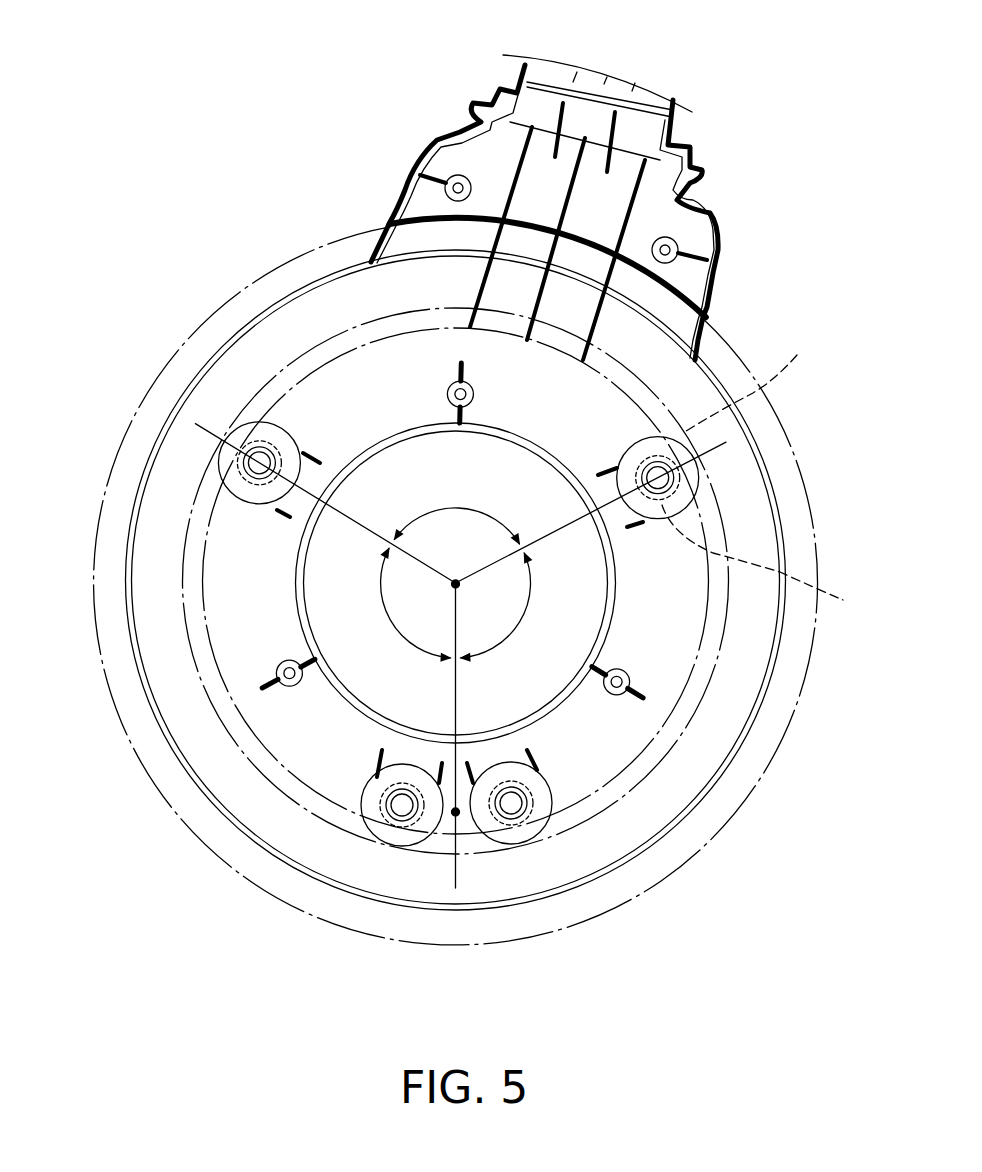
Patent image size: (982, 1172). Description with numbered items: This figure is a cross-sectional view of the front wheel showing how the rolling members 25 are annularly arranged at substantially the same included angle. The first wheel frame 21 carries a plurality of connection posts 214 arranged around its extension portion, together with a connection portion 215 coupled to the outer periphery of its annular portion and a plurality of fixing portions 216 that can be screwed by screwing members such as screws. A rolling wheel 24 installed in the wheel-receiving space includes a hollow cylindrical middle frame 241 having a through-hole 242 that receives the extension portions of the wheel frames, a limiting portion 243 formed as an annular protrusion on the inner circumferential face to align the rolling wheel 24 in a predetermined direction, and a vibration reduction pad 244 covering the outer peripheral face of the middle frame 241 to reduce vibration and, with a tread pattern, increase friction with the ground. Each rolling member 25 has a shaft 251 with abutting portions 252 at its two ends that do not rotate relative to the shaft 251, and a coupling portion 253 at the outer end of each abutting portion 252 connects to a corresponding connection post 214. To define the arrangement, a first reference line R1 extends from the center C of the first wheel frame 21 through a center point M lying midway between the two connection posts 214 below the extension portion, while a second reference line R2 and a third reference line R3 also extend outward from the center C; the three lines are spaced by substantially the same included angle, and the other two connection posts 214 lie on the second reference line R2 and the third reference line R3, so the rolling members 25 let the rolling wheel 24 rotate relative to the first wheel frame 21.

The first wheel frame 21 is at (368, 172).
The connection post 214 is at (779, 561).
The connection portion 215 is at (437, 140).
The fixing portion 216 is at (453, 387).
The rolling wheel 24 is at (140, 353).
The middle frame 241 is at (203, 753).
The through-hole 242 is at (228, 685).
The limiting portion 243 is at (230, 803).
The vibration reduction pad 244 is at (200, 323).
The rolling member 25 is at (597, 792).
The shaft 251 is at (755, 376).
The abutting portion 252 is at (640, 440).
The coupling portion 253 is at (683, 458).
The first reference line R1 is at (456, 870).
The second reference line R2 is at (196, 424).
The third reference line R3 is at (568, 524).
The center C is at (466, 595).
The center point M is at (455, 815).